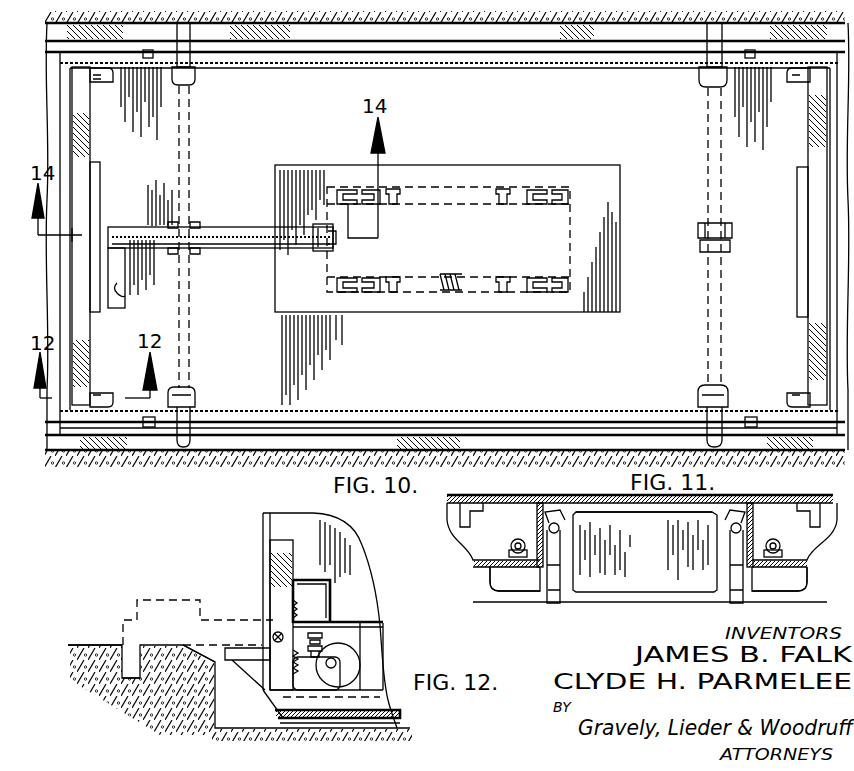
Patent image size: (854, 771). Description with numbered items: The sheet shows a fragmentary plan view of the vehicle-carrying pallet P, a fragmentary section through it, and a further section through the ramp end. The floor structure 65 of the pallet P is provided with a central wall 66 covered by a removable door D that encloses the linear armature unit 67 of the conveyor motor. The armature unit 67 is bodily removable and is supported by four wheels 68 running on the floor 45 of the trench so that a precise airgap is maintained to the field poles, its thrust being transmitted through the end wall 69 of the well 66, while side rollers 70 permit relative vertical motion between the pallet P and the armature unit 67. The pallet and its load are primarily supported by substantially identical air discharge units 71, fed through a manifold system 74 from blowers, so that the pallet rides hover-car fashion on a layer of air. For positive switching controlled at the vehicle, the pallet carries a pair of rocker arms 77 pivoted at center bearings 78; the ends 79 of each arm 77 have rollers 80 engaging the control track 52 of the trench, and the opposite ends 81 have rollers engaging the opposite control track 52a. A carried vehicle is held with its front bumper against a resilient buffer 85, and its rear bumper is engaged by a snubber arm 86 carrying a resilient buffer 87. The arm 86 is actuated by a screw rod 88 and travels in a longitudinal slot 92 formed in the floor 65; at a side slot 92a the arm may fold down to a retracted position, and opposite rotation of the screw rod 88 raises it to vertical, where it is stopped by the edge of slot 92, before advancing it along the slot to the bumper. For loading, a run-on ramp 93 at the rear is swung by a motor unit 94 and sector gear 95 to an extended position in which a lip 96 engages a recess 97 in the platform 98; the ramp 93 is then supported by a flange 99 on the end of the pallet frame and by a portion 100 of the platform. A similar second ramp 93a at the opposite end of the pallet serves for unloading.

In FIG. 11, the floor of the trench 45 is at (478, 602).
In FIG. 10, the control track 52 is at (313, 444).
In FIG. 10, the opposite control track 52a is at (511, 40).
In FIG. 10, the floor structure 65 is at (601, 119).
In FIG. 11, the floor structure 65 is at (452, 495).
In FIG. 12, the floor structure 65 is at (375, 622).
In FIG. 10, the central wall 66 is at (440, 187).
In FIG. 11, the central wall 66 is at (757, 497).
In FIG. 10, the linear armature unit 67 is at (421, 275).
In FIG. 11, the linear armature unit 67 is at (648, 563).
In FIG. 10, the wheels 68 is at (543, 293).
In FIG. 11, the wheels 68 is at (549, 602).
In FIG. 10, the end wall 69 is at (566, 220).
In FIG. 10, the side rollers 70 is at (497, 293).
In FIG. 11, the side rollers 70 is at (542, 502).
In FIG. 11, the air discharge units 71 is at (512, 585).
In FIG. 12, the air discharge units 71 is at (400, 721).
In FIG. 11, the manifold system 74 is at (516, 540).
In FIG. 10, the rocker arms 77 is at (191, 147).
In FIG. 10, the center bearings 78 is at (198, 277).
In FIG. 10, the ends of arm 79 is at (173, 452).
In FIG. 10, the rollers 80 is at (168, 450).
In FIG. 10, the opposite ends of arm 81 is at (203, 67).
In FIG. 10, the resilient buffer 85 is at (798, 180).
In FIG. 10, the snubber arm 86 is at (318, 251).
In FIG. 10, the resilient buffer 87 is at (330, 234).
In FIG. 10, the screw rod 88 is at (240, 244).
In FIG. 10, the longitudinal slot 92 is at (215, 228).
In FIG. 10, the side slot 92a is at (125, 295).
In FIG. 10, the run-on ramp 93 is at (88, 157).
In FIG. 12, the run-on ramp 93 is at (262, 560).
In FIG. 10, the second ramp 93a is at (810, 300).
In FIG. 12, the motor unit 94 is at (347, 654).
In FIG. 10, the sector gear 95 is at (97, 83).
In FIG. 12, the sector gear 95 is at (258, 676).
In FIG. 12, the lip 96 is at (118, 680).
In FIG. 12, the recess 97 is at (138, 682).
In FIG. 12, the platform 98 is at (78, 645).
In FIG. 12, the flange 99 is at (232, 668).
In FIG. 12, the portion of the platform 100 is at (137, 678).
In FIG. 10, the removable door D is at (613, 187).
In FIG. 11, the removable door D is at (575, 497).
In FIG. 10, the pallet P is at (285, 462).
In FIG. 12, the pallet P is at (372, 548).